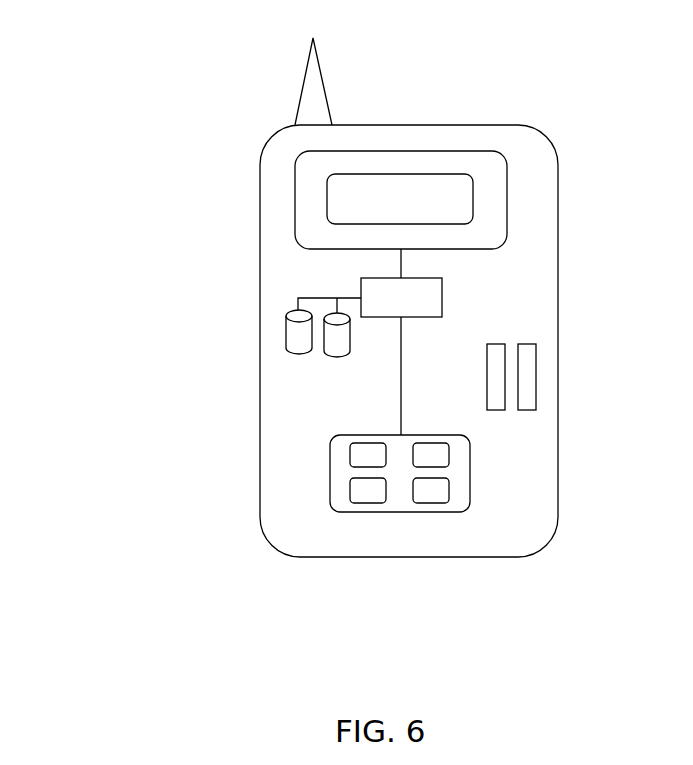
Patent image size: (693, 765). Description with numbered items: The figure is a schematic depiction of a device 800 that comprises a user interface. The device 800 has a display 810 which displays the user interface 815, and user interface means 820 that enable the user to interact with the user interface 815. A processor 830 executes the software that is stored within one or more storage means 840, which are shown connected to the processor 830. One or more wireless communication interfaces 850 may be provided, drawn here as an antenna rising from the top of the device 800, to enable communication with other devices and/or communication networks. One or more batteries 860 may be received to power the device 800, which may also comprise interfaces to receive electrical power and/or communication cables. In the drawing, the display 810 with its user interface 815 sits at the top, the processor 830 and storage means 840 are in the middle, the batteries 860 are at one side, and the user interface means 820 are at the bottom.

The device 800 is at (245, 205).
The wireless communication interface 850 is at (303, 87).
The display 810 is at (489, 150).
The user interface 815 is at (445, 203).
The processor 830 is at (442, 301).
The storage means 840 is at (333, 345).
The battery 860 is at (497, 392).
The user interface means 820 is at (352, 515).